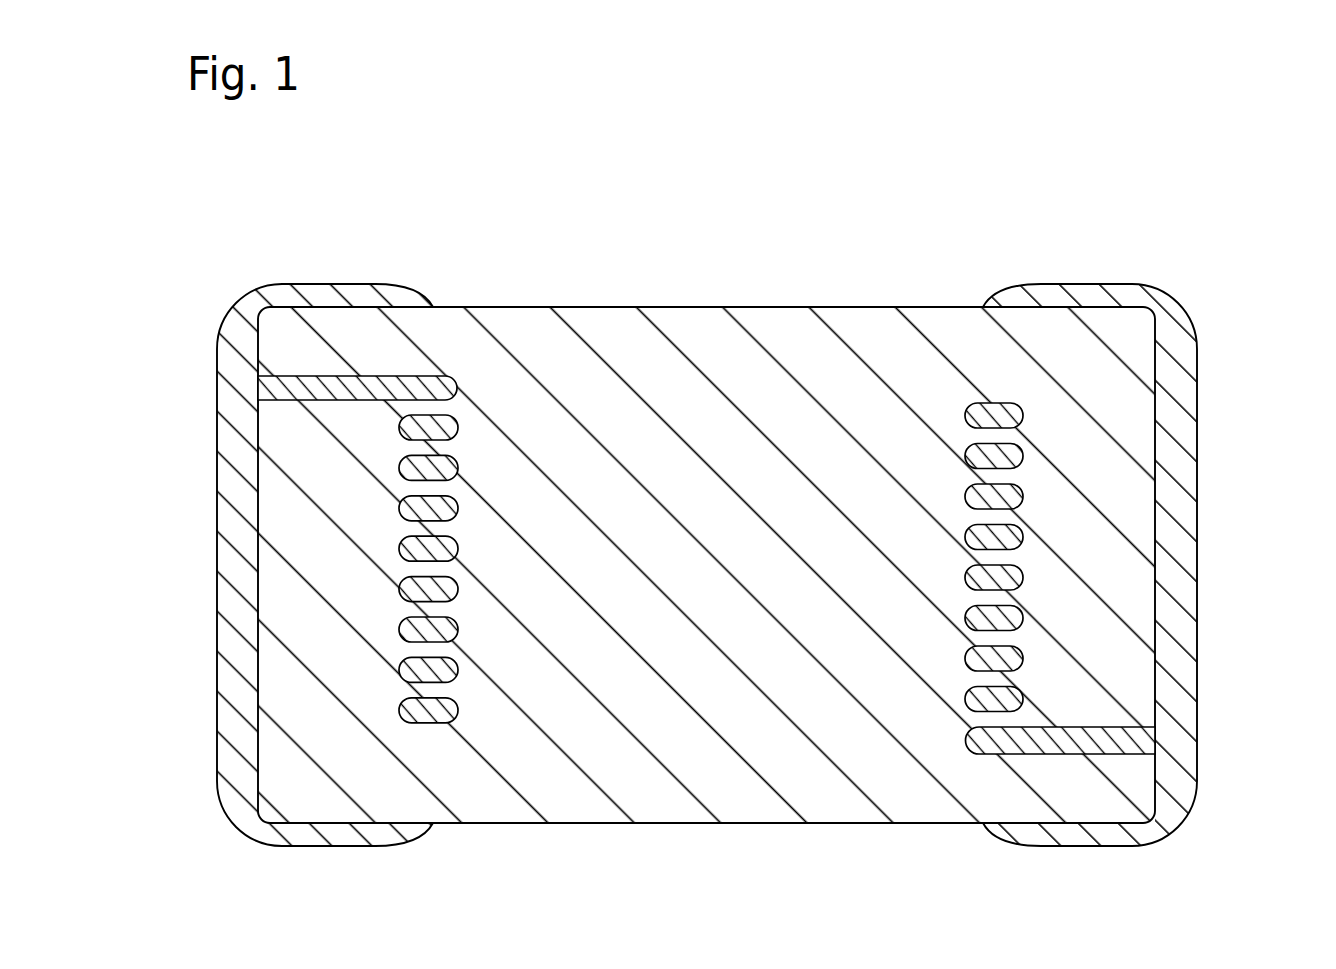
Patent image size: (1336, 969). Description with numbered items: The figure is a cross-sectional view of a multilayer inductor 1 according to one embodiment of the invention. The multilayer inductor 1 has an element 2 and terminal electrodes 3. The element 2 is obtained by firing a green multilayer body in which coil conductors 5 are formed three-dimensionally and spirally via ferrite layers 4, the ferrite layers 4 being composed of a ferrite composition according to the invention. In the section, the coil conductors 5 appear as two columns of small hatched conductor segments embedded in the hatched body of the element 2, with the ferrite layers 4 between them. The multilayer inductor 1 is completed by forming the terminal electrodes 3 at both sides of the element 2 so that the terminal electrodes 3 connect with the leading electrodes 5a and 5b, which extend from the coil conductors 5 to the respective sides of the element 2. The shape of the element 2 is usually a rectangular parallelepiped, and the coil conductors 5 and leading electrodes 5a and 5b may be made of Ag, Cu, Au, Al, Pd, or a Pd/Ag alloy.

The multilayer inductor 1 is at (735, 546).
The element 2 is at (783, 565).
The terminal electrodes 3 is at (247, 549).
The ferrite layers 4 is at (997, 550).
The coil conductors 5 is at (1000, 660).
The leading electrode 5a is at (1072, 757).
The leading electrode 5b is at (364, 382).